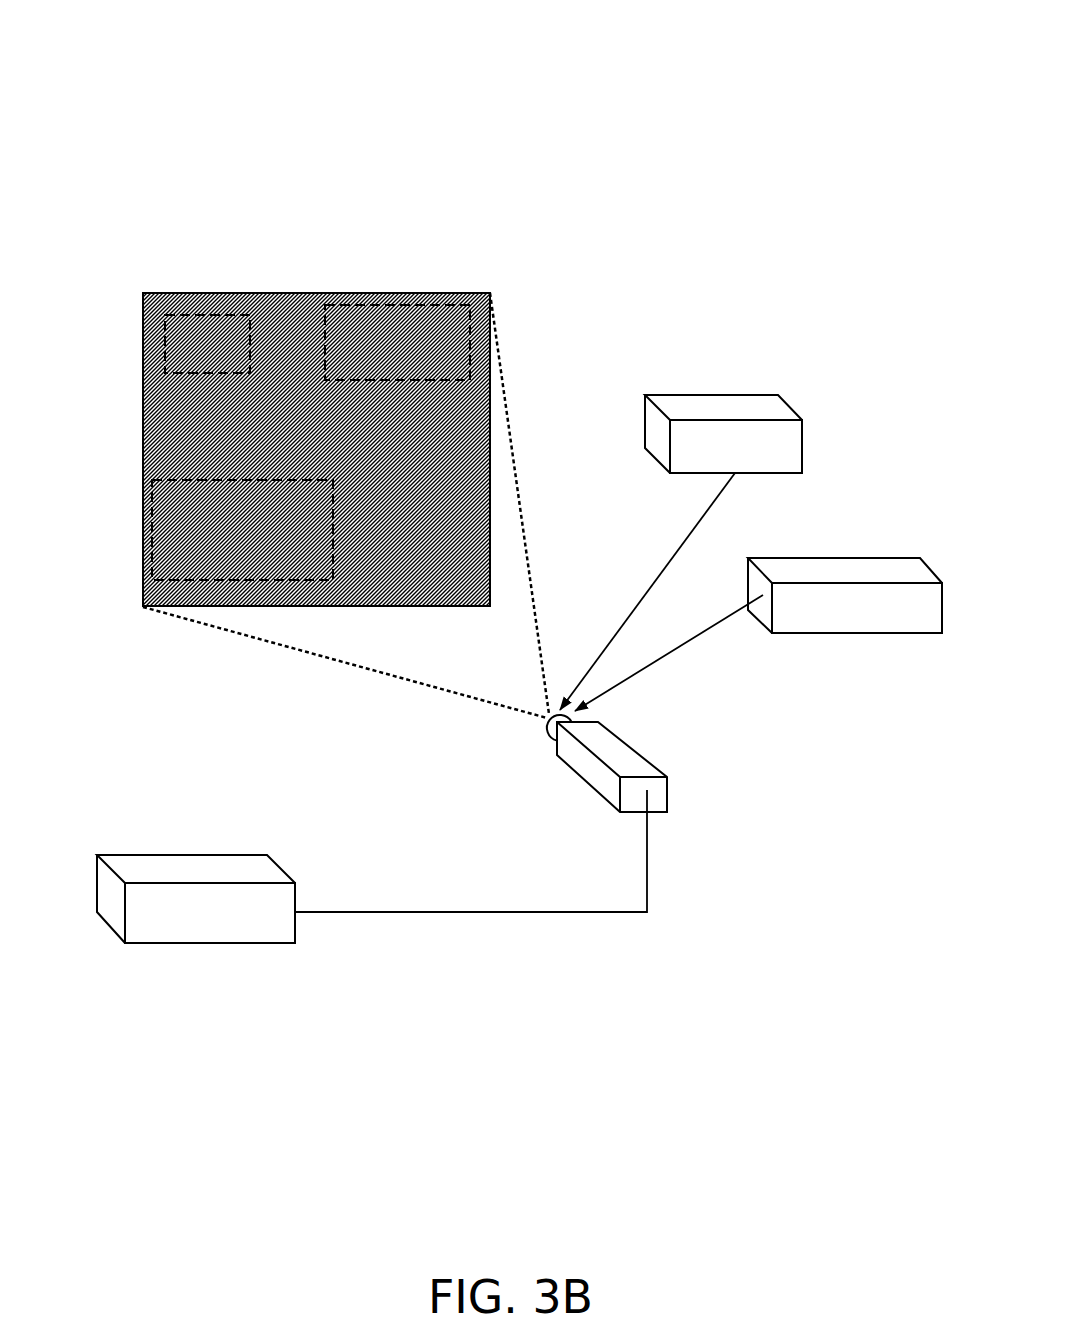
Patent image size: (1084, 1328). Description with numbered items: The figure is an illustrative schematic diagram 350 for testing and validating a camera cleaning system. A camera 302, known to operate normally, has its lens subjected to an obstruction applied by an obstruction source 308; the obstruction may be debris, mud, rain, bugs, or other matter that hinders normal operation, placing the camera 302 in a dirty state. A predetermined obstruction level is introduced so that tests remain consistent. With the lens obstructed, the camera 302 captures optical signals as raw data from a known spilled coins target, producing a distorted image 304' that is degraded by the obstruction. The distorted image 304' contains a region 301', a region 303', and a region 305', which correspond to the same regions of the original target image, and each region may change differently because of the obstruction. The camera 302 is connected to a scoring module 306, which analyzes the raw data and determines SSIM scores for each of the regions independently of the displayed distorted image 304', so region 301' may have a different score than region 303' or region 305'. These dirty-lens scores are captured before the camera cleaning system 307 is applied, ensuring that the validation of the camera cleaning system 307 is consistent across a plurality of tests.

The schematic diagram 350 is at (878, 23).
The region 301' is at (174, 322).
The region 303' is at (210, 515).
The distorted image 304' is at (316, 425).
The region 305' is at (406, 318).
The camera 302 is at (590, 768).
The scoring module 306 is at (113, 900).
The camera cleaning system 307 is at (888, 567).
The obstruction source 308 is at (720, 402).